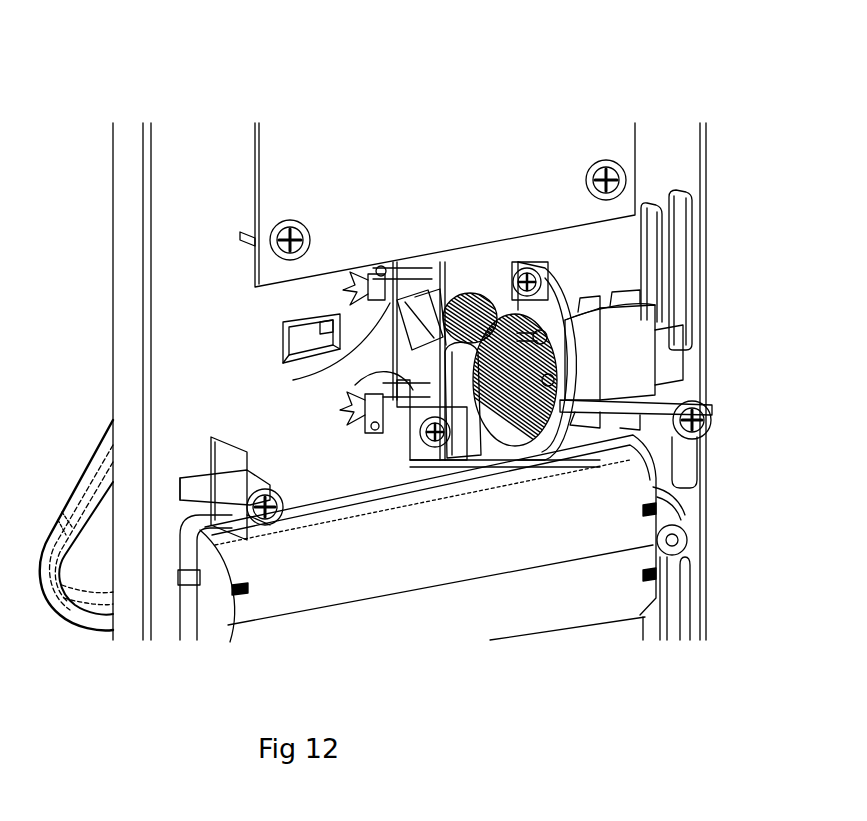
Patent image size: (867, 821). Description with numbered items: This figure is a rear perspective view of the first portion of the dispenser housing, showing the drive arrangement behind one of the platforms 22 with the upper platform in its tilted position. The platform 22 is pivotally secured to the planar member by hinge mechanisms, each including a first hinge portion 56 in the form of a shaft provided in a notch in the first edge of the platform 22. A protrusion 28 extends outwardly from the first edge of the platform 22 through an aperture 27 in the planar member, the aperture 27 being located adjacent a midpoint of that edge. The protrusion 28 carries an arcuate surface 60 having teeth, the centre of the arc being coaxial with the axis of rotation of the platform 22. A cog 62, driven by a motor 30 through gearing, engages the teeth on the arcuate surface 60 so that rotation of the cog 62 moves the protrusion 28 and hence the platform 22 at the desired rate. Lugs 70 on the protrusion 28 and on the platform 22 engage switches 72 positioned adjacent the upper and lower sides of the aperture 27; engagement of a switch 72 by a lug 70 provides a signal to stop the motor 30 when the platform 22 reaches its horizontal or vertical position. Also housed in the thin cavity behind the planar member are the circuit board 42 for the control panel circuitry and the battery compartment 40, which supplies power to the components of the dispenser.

The platform 22 is at (95, 608).
The aperture 27 is at (432, 270).
The protrusion 28 is at (440, 288).
The motor 30 is at (642, 357).
The battery compartment 40 is at (508, 602).
The circuit board 42 is at (300, 152).
The first hinge portion 56 is at (303, 341).
The arcuate surface 60 is at (473, 300).
The cog 62 is at (492, 272).
The lug 70 is at (392, 367).
The switch 72 is at (345, 291).